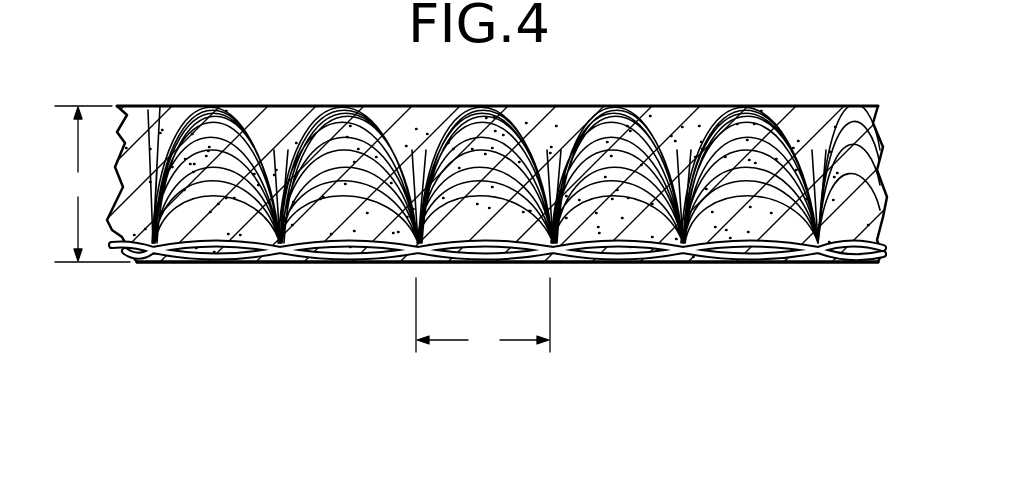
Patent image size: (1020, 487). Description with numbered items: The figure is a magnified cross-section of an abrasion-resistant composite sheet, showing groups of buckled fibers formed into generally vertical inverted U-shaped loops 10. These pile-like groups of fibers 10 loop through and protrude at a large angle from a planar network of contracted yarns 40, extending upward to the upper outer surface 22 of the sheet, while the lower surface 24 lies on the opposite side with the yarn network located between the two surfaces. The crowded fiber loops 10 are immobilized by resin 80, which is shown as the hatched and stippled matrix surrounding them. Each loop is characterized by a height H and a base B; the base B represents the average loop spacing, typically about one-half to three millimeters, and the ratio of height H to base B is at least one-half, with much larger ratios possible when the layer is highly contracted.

The inverted U-shaped loops 10 is at (652, 110).
The upper outer surface 22 is at (250, 108).
The resin 80 is at (430, 130).
The lower surface 24 is at (497, 286).
The contracted yarns 40 is at (747, 245).
The height H is at (92, 184).
The base B is at (483, 317).